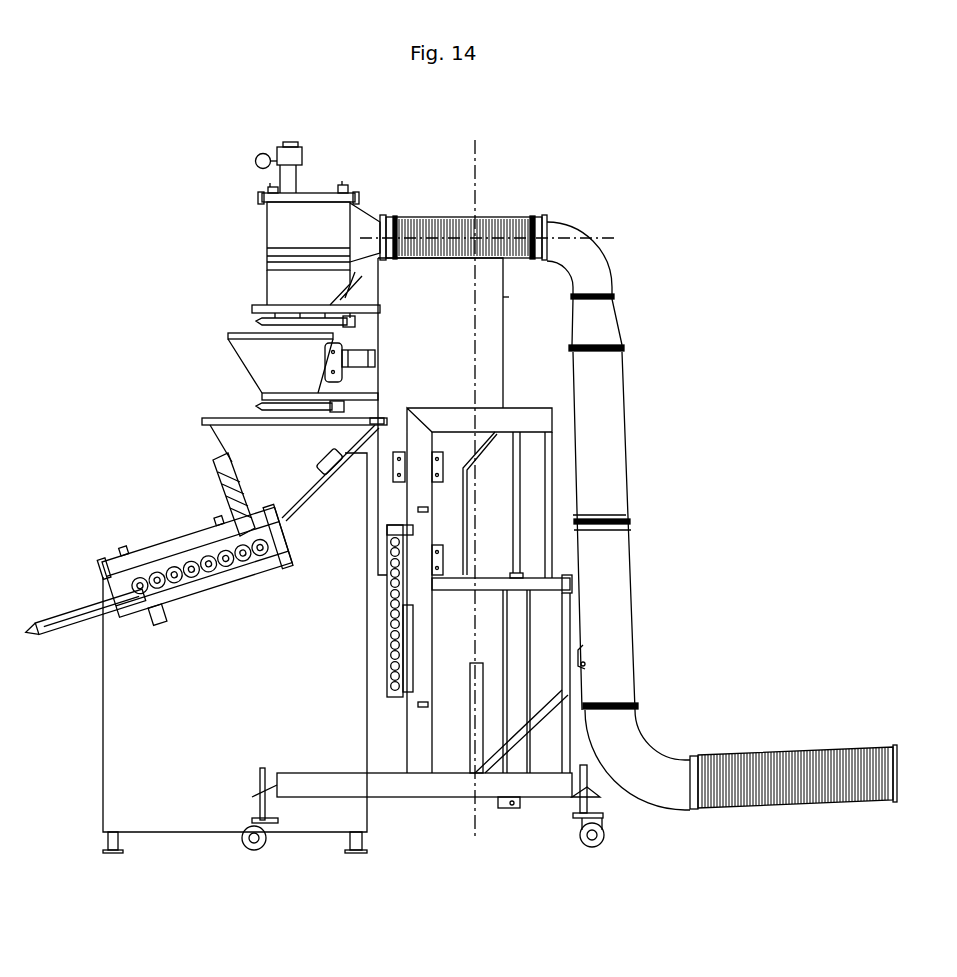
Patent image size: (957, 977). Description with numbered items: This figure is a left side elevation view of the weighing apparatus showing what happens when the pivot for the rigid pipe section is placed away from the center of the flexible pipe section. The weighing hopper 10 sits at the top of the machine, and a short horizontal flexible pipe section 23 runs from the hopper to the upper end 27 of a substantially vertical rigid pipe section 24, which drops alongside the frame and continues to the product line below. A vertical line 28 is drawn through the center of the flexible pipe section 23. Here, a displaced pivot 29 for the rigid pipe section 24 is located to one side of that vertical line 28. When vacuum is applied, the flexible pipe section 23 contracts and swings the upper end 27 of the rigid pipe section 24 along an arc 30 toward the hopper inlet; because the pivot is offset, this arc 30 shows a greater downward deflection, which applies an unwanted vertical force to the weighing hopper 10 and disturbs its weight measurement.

The weighing hopper 10 is at (267, 227).
The flexible pipe section 23 is at (442, 217).
The rigid pipe section 24 is at (633, 612).
The upper end of the rigid pipe section 27 is at (608, 263).
The vertical line 28 is at (476, 148).
The displaced pivot 29 is at (577, 657).
The arc 30 is at (467, 240).